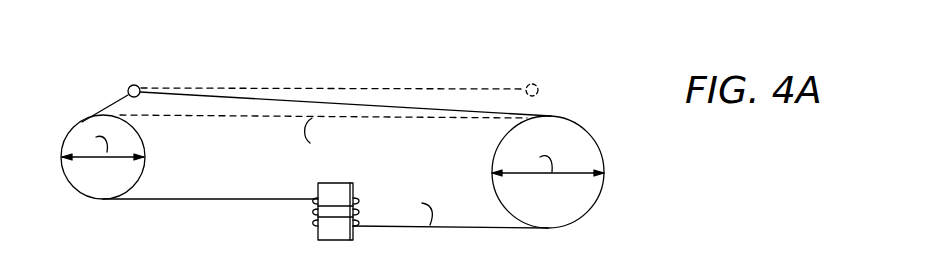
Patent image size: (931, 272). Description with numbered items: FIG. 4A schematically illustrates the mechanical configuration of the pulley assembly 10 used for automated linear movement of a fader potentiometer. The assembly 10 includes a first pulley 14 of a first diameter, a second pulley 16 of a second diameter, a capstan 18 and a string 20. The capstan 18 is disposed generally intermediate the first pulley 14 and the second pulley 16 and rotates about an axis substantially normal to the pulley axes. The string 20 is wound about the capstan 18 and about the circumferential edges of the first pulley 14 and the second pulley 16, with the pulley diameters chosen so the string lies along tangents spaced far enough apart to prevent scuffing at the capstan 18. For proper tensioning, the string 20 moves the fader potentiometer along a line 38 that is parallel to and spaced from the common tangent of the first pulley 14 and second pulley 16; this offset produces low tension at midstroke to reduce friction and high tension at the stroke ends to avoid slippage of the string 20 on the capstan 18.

The pulley assembly 10 is at (93, 89).
The first pulley 14 is at (143, 143).
The second pulley 16 is at (588, 130).
The capstan 18 is at (318, 238).
The string 20 is at (465, 113).
The line 38 is at (430, 89).